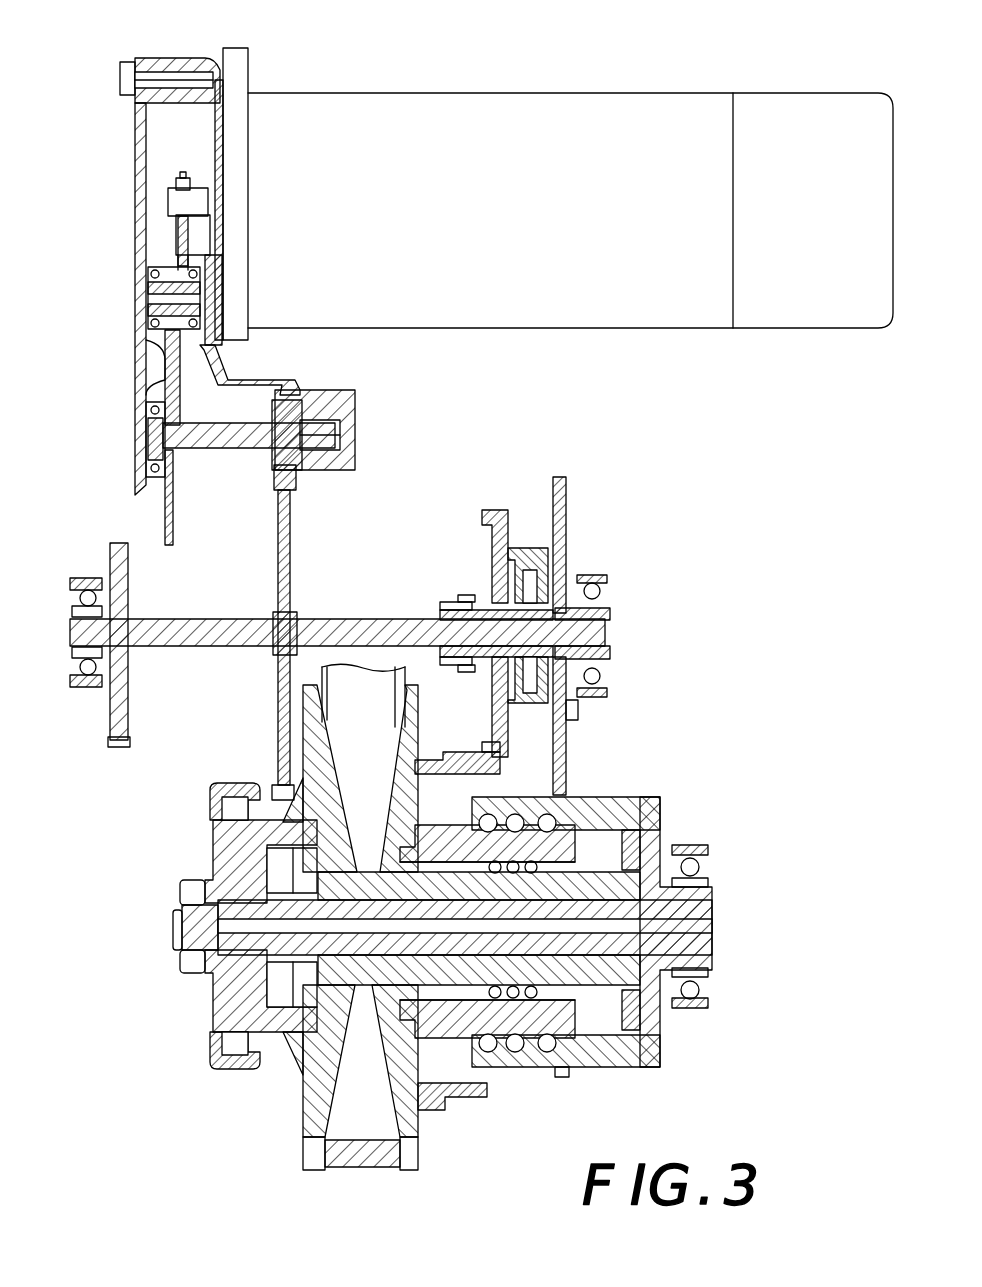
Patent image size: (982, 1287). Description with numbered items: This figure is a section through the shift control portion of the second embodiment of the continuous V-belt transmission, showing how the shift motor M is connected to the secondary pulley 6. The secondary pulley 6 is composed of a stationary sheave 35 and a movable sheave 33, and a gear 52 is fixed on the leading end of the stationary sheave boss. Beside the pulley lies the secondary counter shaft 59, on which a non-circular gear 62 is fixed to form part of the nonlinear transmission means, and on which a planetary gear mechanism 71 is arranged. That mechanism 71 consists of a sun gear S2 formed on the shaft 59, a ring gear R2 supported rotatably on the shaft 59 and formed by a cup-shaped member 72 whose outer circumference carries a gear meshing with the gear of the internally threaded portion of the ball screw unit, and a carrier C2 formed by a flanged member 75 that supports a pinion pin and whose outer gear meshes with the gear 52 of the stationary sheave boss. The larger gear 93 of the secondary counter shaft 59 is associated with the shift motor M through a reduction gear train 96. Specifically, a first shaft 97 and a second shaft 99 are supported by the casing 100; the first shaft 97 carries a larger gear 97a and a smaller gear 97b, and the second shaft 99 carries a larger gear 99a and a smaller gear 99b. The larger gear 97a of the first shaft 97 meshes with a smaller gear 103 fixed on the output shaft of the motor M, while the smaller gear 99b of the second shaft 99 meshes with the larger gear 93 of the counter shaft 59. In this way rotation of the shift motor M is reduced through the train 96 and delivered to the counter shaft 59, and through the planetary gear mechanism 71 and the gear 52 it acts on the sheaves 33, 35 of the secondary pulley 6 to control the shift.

The shift motor M is at (378, 115).
The reduction gear train 96 is at (150, 497).
The casing 100 is at (140, 205).
The smaller gear 103 is at (178, 186).
The larger gear 97a is at (178, 262).
The first shaft 97 is at (148, 298).
The smaller gear 97b is at (146, 345).
The larger gear 99a is at (146, 395).
The smaller gear 99b is at (322, 392).
The second shaft 99 is at (228, 452).
The larger gear 93 is at (278, 552).
The secondary counter shaft 59 is at (352, 630).
The non-circular gear 62 is at (122, 737).
The planetary gear mechanism 71 is at (600, 520).
The flanged member 75 is at (568, 765).
The sun gear S2 is at (535, 595).
The ring gear R2 is at (556, 573).
The carrier C2 is at (565, 710).
The cup-shaped member 72 is at (490, 745).
The secondary pulley 6 is at (333, 1168).
The stationary sheave 35 is at (310, 1150).
The movable sheave 33 is at (415, 1150).
The gear 52 is at (485, 1100).